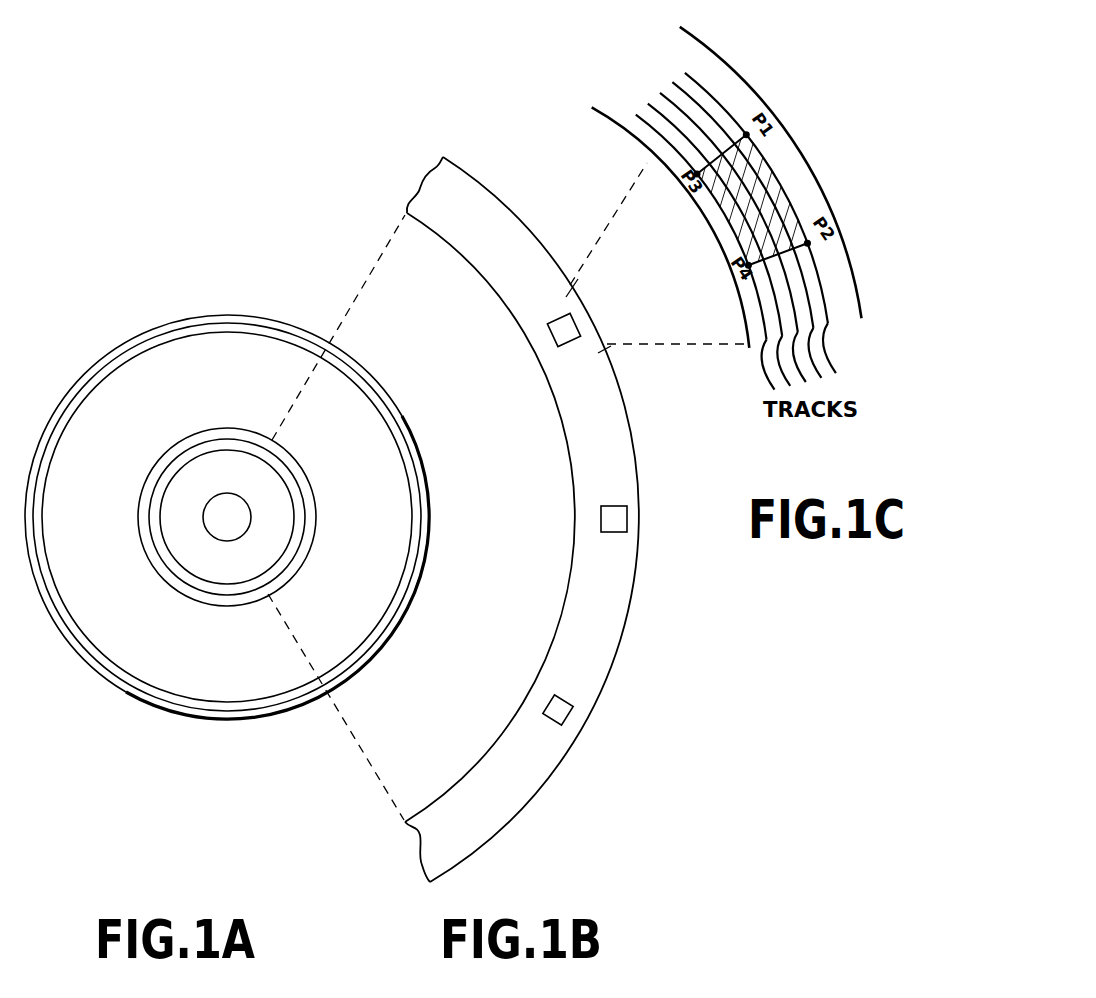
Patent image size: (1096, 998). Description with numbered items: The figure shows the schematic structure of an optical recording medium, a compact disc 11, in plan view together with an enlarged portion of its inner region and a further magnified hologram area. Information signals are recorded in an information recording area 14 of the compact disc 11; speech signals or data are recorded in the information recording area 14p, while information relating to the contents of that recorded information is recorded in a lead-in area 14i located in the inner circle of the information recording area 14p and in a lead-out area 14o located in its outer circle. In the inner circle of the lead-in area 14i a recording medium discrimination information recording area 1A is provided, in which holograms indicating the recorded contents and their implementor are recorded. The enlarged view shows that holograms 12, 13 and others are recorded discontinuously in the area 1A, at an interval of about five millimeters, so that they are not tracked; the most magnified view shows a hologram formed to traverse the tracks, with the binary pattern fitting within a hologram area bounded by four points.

In FIG. 1A, the compact disc 11 is at (296, 311).
In FIG. 1B, the compact disc 11 is at (567, 330).
In FIG. 1C, the compact disc 11 is at (768, 168).
In FIG. 1A, the recording medium discrimination information recording area 1A is at (182, 455).
In FIG. 1B, the recording medium discrimination information recording area 1A is at (607, 637).
In FIG. 1A, the information recording area 14 is at (305, 760).
In FIG. 1A, the lead-in area 14i is at (178, 588).
In FIG. 1A, the information recording area 14p is at (218, 670).
In FIG. 1A, the lead-out area 14o is at (275, 702).
In FIG. 1B, the hologram 12 is at (616, 521).
In FIG. 1B, the hologram 13 is at (561, 713).